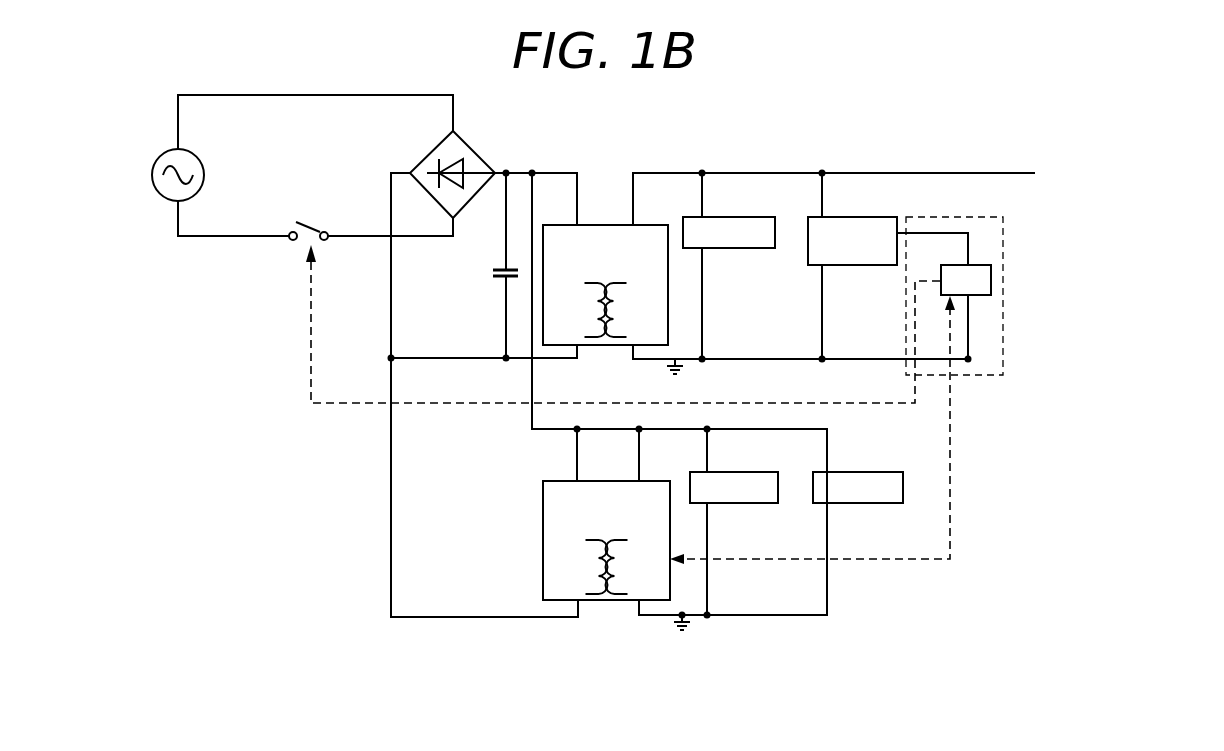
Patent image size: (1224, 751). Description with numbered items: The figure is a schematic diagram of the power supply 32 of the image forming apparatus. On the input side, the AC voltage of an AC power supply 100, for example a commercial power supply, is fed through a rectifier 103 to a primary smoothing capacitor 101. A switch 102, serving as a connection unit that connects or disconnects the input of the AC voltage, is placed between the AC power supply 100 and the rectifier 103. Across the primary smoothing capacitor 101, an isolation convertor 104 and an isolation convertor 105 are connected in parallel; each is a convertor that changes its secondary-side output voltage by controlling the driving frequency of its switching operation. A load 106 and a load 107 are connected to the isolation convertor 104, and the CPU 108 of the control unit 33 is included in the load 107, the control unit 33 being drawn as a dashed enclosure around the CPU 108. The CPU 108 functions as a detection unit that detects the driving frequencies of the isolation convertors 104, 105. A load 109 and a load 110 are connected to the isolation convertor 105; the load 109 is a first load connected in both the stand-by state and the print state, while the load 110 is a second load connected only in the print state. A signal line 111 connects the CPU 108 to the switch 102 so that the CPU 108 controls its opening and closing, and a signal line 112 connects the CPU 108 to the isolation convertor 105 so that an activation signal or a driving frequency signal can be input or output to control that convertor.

The power supply 32 is at (825, 132).
The control unit 33 is at (960, 216).
The AC power supply 100 is at (204, 152).
The primary smoothing capacitor 101 is at (492, 282).
The switch 102 is at (307, 219).
The rectifier 103 is at (475, 148).
The isolation convertor 104 is at (603, 345).
The isolation convertor 105 is at (608, 600).
The load 106 is at (735, 248).
The load 107 is at (857, 265).
The CPU 108 is at (991, 280).
The load 109 is at (737, 503).
The load 110 is at (870, 503).
The signal line 111 is at (310, 352).
The signal line 112 is at (935, 565).